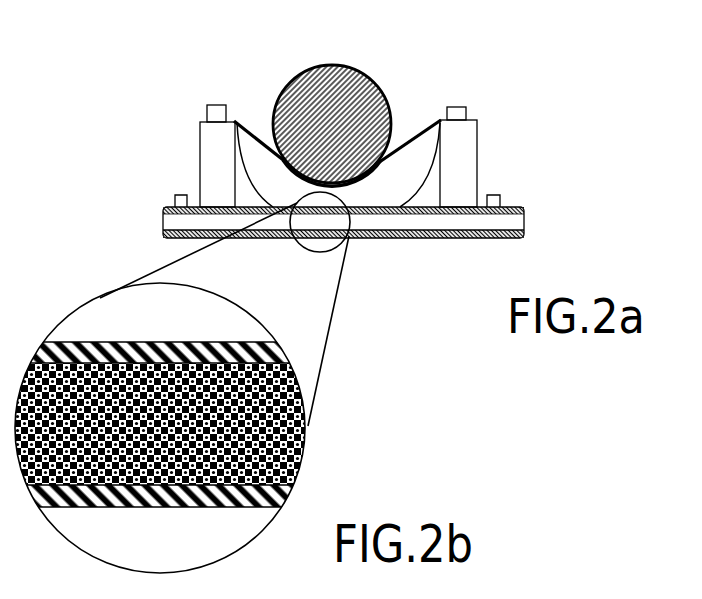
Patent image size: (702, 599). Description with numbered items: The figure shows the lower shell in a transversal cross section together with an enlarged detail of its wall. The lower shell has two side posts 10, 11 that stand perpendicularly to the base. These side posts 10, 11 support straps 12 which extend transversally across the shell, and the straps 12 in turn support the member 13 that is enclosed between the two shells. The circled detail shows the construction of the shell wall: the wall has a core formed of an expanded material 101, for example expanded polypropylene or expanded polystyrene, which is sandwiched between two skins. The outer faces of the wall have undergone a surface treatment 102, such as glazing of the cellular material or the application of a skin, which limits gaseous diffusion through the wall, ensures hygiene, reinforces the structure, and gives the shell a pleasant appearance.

In FIG. 2A, the side post 10 is at (224, 170).
In FIG. 2A, the side post 11 is at (457, 143).
In FIG. 2A, the strap 12 is at (369, 183).
In FIG. 2A, the member 13 is at (371, 67).
In FIG. 2B, the expanded material 101 is at (105, 425).
In FIG. 2B, the surface treatment 102 is at (105, 507).